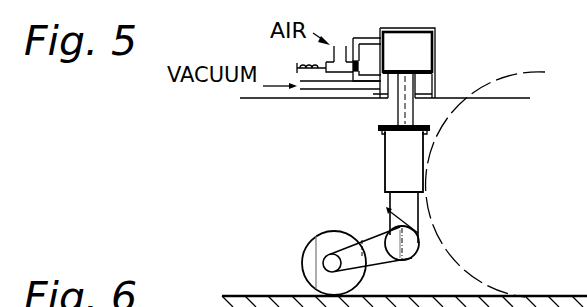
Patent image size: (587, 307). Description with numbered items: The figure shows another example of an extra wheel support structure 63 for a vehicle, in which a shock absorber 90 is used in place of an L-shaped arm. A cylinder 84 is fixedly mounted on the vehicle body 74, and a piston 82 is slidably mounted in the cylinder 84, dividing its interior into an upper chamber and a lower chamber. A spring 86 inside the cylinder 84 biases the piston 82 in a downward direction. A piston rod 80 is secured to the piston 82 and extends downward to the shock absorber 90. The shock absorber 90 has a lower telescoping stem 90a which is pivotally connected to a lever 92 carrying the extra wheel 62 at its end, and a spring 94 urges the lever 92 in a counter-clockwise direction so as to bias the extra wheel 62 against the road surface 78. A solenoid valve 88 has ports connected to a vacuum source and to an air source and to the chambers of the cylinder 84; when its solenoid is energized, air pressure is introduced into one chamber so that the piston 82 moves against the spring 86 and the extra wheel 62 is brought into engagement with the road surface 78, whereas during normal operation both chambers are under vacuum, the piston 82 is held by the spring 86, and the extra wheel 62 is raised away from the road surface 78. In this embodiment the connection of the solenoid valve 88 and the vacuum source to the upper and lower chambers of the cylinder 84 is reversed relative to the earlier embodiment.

The extra wheel 62 is at (302, 258).
The extra wheel support structure 63 is at (362, 155).
The vehicle body 74 is at (517, 98).
The road surface 78 is at (475, 296).
The piston rod 80 is at (408, 105).
The piston 82 is at (390, 72).
The cylinder 84 is at (436, 47).
The spring 86 is at (423, 90).
The solenoid valve 88 is at (343, 50).
The shock absorber 90 is at (415, 170).
The lower telescoping stem 90a is at (410, 215).
The lever 92 is at (363, 233).
The spring 94 is at (374, 275).